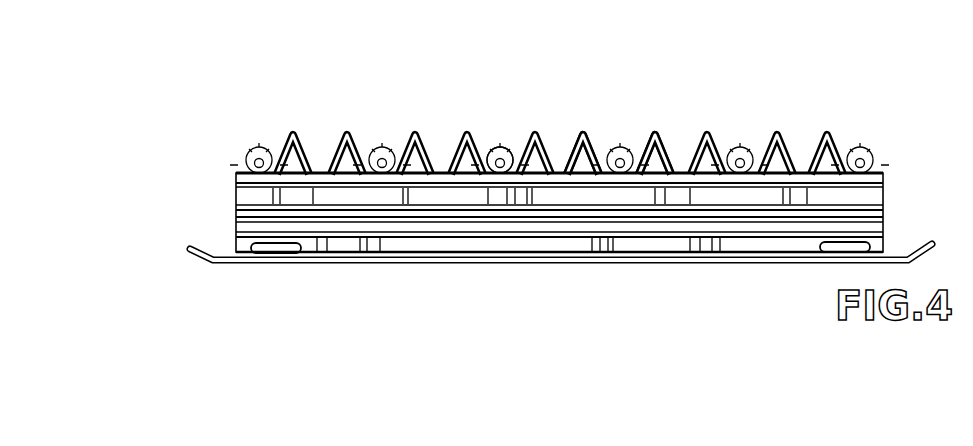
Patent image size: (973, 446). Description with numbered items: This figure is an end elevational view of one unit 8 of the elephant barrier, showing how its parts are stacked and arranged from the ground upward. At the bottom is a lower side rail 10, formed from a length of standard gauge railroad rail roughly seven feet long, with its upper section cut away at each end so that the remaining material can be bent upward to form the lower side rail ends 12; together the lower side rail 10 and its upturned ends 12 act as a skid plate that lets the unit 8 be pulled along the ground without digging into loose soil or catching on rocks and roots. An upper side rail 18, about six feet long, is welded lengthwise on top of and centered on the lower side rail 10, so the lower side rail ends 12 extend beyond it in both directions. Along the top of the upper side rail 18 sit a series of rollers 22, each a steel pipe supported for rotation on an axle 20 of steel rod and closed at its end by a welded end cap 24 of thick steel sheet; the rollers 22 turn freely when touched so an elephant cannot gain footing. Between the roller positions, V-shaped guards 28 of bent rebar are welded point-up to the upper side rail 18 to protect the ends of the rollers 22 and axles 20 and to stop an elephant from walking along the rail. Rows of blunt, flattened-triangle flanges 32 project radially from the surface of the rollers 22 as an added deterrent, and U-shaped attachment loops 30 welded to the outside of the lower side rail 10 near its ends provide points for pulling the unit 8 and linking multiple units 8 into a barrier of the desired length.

The unit 8 is at (312, 102).
The lower side rail 10 is at (228, 190).
The lower side rail end 12 is at (185, 243).
The upper side rail 18 is at (240, 174).
The axle 20 is at (388, 142).
The roller 22 is at (245, 148).
The end cap 24 is at (495, 143).
The guard 28 is at (663, 132).
The attachment loop 30 is at (259, 245).
The flange 32 is at (501, 143).